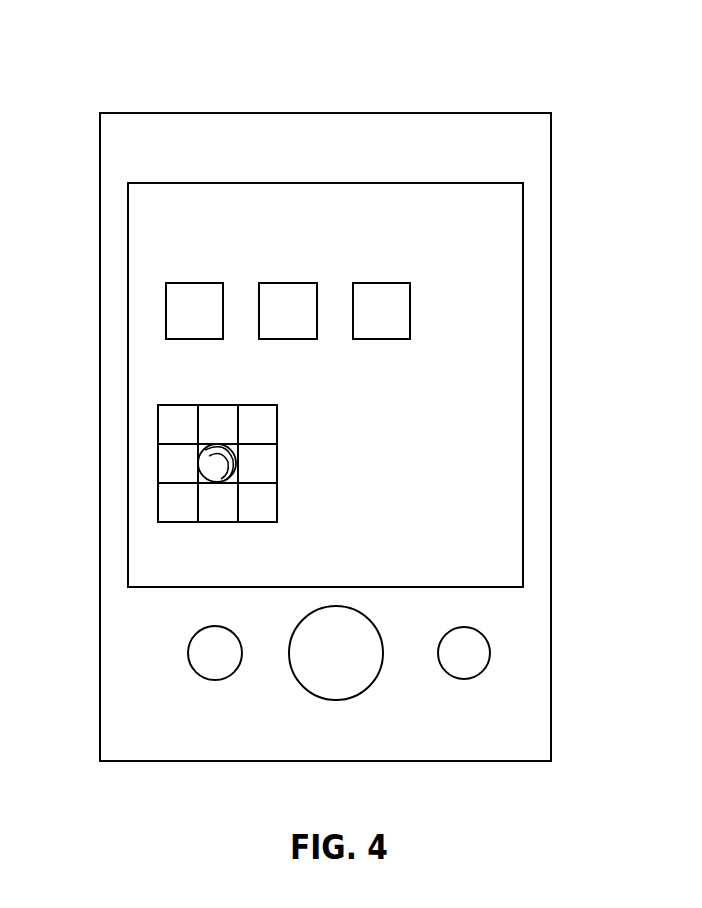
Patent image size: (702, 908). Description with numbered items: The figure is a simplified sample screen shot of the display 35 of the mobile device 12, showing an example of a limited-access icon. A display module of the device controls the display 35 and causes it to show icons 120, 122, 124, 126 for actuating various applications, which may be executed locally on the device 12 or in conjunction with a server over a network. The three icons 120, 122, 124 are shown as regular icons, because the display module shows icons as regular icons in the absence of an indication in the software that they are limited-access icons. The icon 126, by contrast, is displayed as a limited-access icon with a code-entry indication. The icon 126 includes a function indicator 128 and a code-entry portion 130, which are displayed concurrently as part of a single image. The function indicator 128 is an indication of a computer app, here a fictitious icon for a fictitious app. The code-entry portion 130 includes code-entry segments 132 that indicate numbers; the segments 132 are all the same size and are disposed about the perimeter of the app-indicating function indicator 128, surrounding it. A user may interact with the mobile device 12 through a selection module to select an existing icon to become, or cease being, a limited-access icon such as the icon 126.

The mobile device 12 is at (325, 113).
The display 35 is at (425, 183).
The icon 120 is at (195, 283).
The icon 122 is at (288, 283).
The icon 124 is at (382, 283).
The limited-access icon 126 is at (289, 405).
The function indicator 128 is at (199, 460).
The code-entry portion 130 is at (286, 455).
The code-entry segments 132 is at (177, 522).